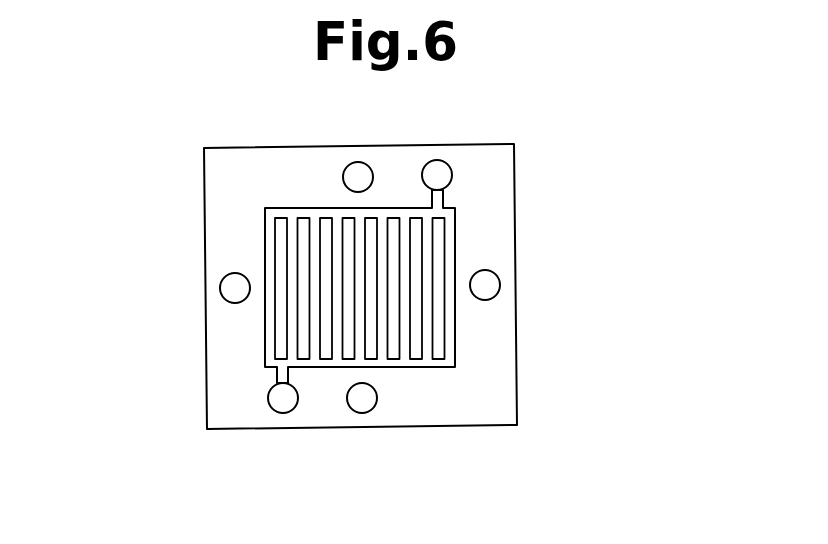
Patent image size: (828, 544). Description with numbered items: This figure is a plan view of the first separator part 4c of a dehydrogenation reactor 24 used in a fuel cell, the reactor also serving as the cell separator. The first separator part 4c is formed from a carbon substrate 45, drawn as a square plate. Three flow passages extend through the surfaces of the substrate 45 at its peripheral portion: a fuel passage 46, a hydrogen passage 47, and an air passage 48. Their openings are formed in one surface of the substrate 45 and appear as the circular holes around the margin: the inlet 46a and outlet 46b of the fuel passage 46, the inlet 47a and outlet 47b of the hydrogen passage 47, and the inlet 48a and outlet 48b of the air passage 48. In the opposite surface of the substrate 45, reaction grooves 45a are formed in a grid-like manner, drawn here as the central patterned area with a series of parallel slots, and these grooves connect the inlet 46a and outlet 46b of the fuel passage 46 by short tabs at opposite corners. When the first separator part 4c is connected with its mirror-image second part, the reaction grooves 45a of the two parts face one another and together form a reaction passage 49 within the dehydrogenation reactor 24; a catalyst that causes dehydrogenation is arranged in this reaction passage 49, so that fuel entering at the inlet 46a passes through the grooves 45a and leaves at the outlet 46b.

The dehydrogenation reactor 24 is at (180, 186).
The first separator part 4c is at (531, 171).
The carbon substrate 45 is at (500, 240).
The reaction grooves 45a is at (454, 336).
The fuel passage 46 is at (435, 162).
The inlet of the fuel passage 46a is at (283, 412).
The outlet of the fuel passage 46b is at (452, 177).
The hydrogen passage 47 is at (222, 287).
The inlet of the hydrogen passage 47a is at (228, 300).
The outlet of the hydrogen passage 47b is at (494, 288).
The air passage 48 is at (350, 168).
The inlet of the air passage 48a is at (368, 168).
The outlet of the air passage 48b is at (363, 412).
The reaction passage 49 is at (432, 366).